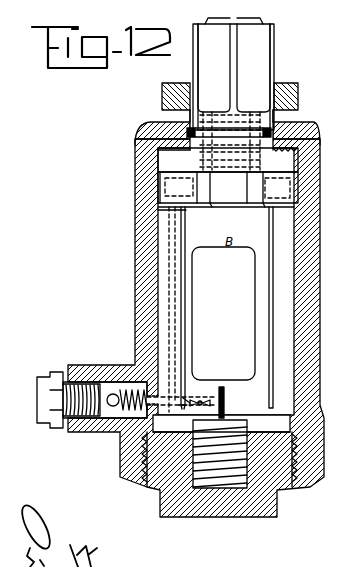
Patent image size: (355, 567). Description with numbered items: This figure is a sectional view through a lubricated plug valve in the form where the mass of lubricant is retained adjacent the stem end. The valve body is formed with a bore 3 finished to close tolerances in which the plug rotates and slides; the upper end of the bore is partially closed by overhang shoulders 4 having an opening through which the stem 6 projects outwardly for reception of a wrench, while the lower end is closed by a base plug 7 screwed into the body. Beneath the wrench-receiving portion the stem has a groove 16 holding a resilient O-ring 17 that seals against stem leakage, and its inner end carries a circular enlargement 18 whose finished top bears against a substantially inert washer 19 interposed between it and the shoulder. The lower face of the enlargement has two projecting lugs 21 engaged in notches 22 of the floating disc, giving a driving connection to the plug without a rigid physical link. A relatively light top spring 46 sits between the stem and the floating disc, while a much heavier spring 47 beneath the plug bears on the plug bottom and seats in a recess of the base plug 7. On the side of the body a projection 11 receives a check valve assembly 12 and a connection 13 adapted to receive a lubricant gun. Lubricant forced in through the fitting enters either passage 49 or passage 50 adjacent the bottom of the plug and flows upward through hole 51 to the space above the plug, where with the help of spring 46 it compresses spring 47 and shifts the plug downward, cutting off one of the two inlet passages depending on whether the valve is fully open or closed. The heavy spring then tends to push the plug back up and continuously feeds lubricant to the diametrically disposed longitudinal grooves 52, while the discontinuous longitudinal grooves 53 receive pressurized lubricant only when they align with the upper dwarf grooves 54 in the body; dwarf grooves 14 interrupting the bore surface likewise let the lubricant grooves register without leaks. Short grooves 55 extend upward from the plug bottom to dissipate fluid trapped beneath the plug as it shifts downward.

The bore 3 is at (320, 160).
The overhang shoulders 4 is at (160, 124).
The stem 6 is at (275, 58).
The base plug 7 is at (278, 510).
The projection 11 is at (100, 368).
The check valve assembly 12 is at (112, 392).
The connection 13 is at (62, 368).
The dwarf grooves 14 is at (187, 218).
The groove 16 is at (296, 128).
The O-ring 17 is at (178, 122).
The circular enlargement 18 is at (228, 142).
The washer 19 is at (158, 150).
The projecting lugs 21 is at (228, 191).
The notches 22 is at (211, 203).
The top spring 46 is at (282, 160).
The heavy spring 47 is at (203, 473).
The passage 49 is at (186, 397).
The passage 50 is at (205, 397).
The hole 51 is at (192, 277).
The longitudinal grooves 52 is at (178, 248).
The longitudinal grooves 53 is at (274, 248).
The upper dwarf grooves 54 is at (266, 207).
The short grooves 55 is at (226, 394).